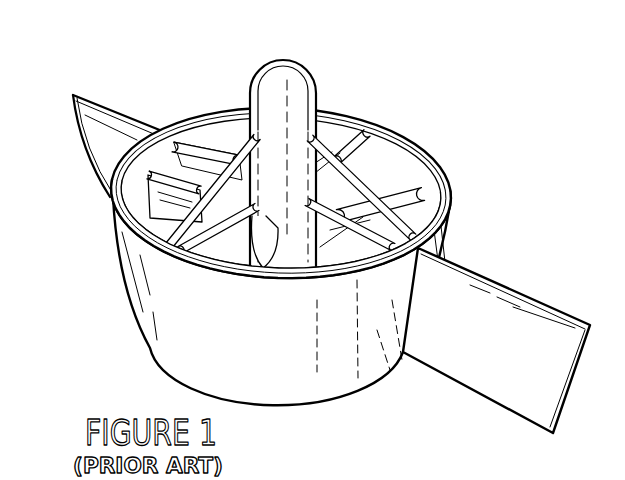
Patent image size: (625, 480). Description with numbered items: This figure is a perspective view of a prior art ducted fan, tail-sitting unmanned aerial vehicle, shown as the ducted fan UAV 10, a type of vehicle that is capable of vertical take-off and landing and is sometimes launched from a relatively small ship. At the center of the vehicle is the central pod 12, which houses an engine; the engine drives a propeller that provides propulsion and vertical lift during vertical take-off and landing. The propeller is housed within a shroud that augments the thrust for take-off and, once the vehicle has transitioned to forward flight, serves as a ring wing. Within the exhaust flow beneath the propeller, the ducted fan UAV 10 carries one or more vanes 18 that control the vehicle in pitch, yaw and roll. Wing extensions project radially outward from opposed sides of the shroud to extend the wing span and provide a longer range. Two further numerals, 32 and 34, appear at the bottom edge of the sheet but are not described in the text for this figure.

The ducted fan UAV 10 is at (495, 202).
The central pod 12 is at (290, 73).
The vanes 18 is at (160, 187).
The element 32 is at (563, 479).
The element 34 is at (480, 479).